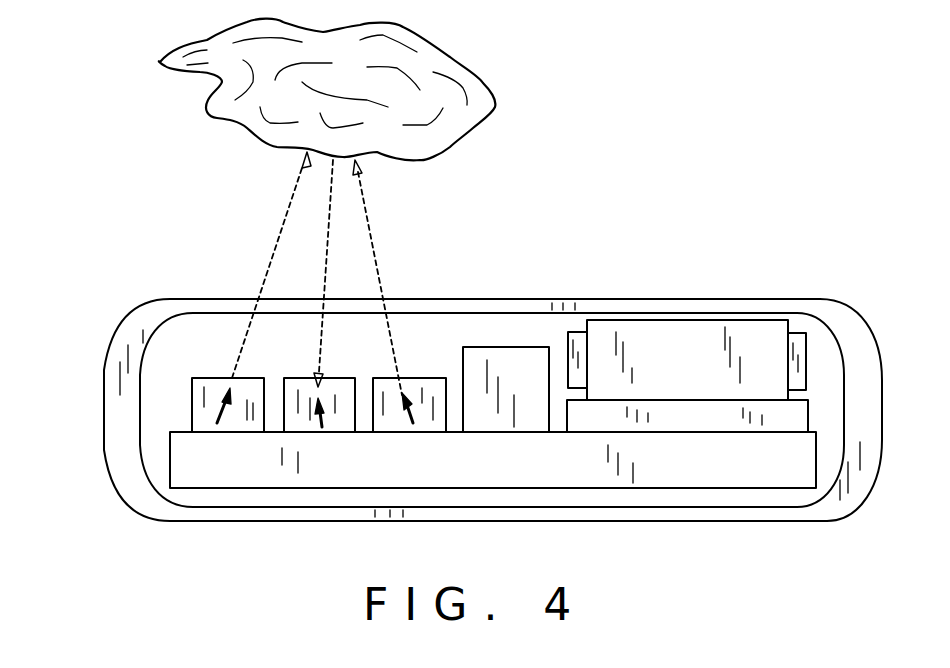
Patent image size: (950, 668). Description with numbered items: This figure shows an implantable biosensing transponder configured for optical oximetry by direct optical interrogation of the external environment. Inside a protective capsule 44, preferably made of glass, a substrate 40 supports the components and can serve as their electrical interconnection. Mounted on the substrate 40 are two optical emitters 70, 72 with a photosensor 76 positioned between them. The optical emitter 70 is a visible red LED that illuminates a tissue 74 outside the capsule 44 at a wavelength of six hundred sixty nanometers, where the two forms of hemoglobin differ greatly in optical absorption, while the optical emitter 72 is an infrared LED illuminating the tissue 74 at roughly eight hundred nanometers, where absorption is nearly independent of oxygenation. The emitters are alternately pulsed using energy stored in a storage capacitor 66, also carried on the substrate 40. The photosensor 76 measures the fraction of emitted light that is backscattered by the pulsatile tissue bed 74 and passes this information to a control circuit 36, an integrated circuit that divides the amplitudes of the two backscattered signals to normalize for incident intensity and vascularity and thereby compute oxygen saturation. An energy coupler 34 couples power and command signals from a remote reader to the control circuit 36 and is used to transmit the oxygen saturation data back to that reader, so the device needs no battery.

The tissue 74 is at (483, 78).
The capsule 44 is at (103, 437).
The substrate 40 is at (707, 488).
The optical emitter 70 is at (192, 398).
The photosensor 76 is at (283, 410).
The optical emitter 72 is at (420, 378).
The storage capacitor 66 is at (504, 347).
The energy coupler 34 is at (587, 323).
The control circuit 36 is at (807, 415).